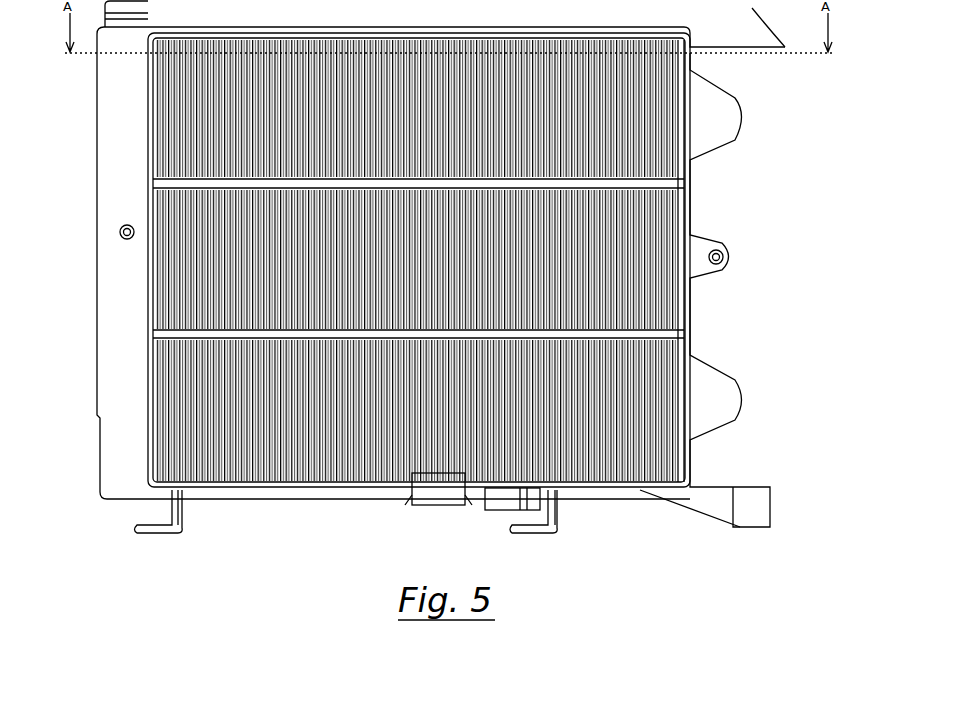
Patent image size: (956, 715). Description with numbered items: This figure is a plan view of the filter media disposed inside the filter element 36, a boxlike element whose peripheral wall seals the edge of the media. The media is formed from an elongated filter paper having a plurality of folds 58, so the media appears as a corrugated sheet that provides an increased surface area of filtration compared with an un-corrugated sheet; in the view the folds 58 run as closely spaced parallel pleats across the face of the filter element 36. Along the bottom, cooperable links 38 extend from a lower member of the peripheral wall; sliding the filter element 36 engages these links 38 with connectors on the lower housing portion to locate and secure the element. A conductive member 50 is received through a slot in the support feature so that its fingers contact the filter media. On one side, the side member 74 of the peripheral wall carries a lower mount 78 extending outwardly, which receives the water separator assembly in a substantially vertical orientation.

The filter element 36 is at (716, 579).
The links 38 is at (178, 528).
The conductive member 50 is at (432, 507).
The folds 58 is at (167, 132).
The side member 74 is at (692, 318).
The lower mount 78 is at (772, 497).